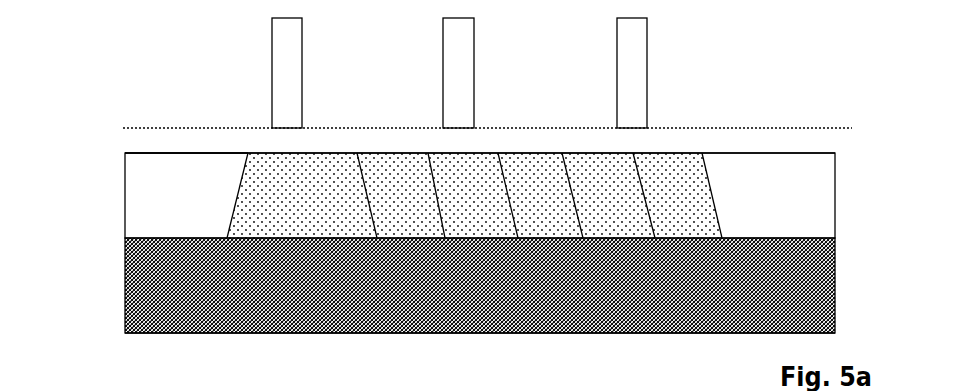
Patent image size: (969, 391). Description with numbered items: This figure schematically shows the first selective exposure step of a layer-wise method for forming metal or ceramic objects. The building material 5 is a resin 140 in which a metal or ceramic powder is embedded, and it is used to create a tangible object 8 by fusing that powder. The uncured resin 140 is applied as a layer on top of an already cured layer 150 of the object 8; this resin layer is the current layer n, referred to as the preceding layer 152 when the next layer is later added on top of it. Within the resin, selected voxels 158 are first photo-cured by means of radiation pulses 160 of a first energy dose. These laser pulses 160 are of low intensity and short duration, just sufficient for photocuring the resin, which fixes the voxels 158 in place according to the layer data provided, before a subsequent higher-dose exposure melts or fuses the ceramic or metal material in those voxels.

The building material 5 is at (177, 163).
The tangible object 8 is at (196, 333).
The resin 140 is at (138, 173).
The cured layer 150 is at (125, 285).
The preceding layer 152 is at (125, 208).
The voxels 158 is at (285, 151).
The radiation pulses 160 is at (302, 70).